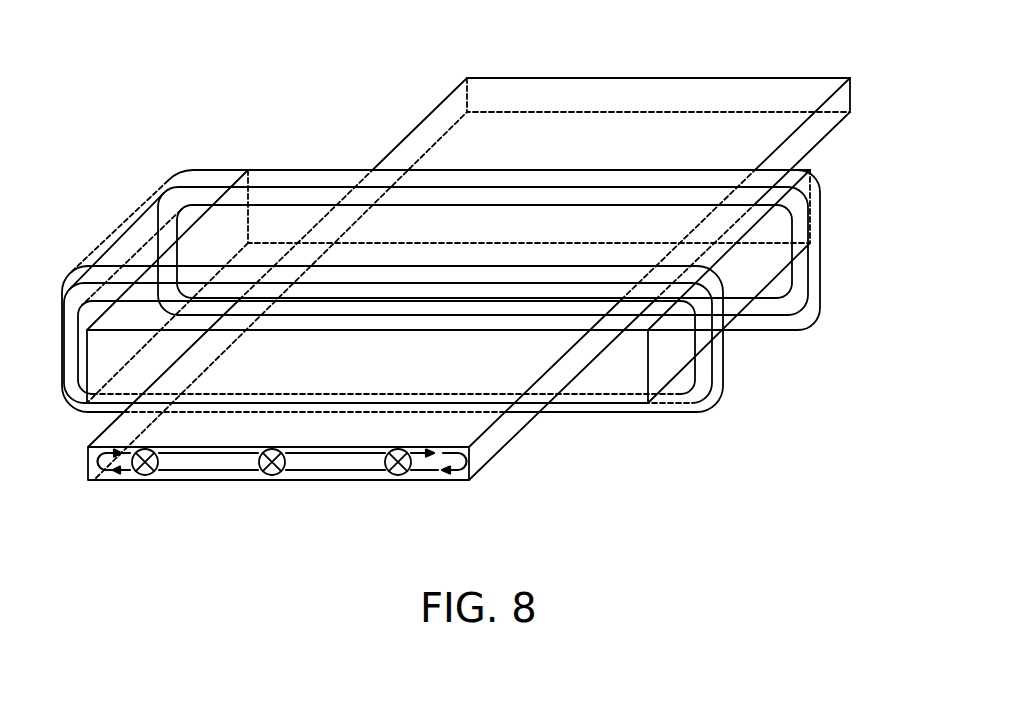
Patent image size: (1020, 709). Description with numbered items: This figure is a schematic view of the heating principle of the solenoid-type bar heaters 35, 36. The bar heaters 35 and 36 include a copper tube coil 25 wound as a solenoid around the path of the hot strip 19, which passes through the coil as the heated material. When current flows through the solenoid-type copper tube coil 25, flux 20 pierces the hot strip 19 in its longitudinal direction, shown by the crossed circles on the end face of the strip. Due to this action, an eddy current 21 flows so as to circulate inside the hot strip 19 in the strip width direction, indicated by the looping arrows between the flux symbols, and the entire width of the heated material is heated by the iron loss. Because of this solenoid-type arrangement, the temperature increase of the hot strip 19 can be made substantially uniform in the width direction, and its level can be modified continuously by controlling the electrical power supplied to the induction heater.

The hot strip 19 is at (650, 100).
The flux 20 is at (144, 478).
The eddy current 21 is at (208, 478).
The copper tube coil 25 is at (822, 230).
The solenoid-type bar heater 35 is at (448, 239).
The solenoid-type bar heater 36 is at (193, 160).